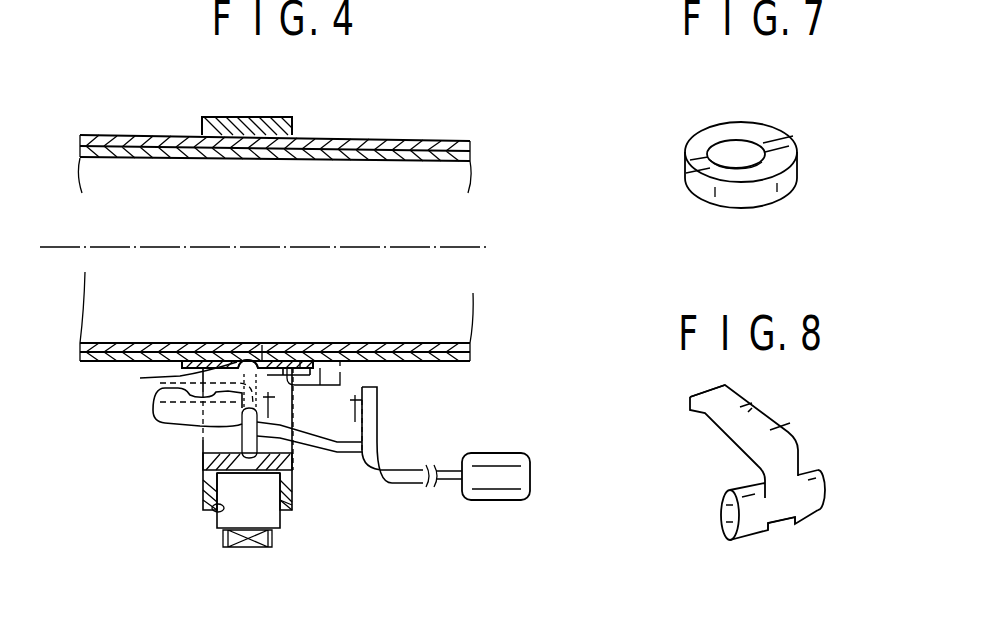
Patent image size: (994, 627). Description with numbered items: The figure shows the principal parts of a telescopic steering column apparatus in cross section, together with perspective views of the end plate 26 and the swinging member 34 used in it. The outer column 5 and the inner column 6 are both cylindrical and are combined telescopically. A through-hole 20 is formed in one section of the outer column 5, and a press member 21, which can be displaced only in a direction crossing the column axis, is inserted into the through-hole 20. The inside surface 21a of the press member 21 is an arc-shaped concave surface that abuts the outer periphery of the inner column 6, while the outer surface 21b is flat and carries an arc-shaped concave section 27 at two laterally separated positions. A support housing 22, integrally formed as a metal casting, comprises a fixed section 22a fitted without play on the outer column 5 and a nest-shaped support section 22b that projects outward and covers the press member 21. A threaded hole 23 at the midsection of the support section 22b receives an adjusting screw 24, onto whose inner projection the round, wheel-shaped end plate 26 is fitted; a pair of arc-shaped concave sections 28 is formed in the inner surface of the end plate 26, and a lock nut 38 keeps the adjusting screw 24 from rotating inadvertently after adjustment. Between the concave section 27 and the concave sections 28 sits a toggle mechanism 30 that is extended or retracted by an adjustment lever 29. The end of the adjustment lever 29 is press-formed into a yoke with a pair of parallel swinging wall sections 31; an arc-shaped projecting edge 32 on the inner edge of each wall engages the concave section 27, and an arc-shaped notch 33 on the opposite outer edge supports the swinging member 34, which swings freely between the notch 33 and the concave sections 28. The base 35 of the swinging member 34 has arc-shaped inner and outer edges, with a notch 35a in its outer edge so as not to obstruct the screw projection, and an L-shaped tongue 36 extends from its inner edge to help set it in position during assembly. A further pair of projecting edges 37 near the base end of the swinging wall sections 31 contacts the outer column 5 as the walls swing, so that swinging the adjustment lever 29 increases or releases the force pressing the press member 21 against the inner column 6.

In FIG. 4, the outer column 5 is at (370, 135).
In FIG. 4, the inner column 6 is at (424, 152).
In FIG. 4, the support housing 22 is at (202, 120).
In FIG. 4, the fixed section 22a is at (272, 117).
In FIG. 4, the support section 22b is at (203, 492).
In FIG. 4, the toggle mechanism 30 is at (240, 352).
In FIG. 4, the arc-shaped concave section 27 is at (248, 362).
In FIG. 4, the arc-shaped projecting edge 32 is at (262, 345).
In FIG. 4, the inside surface 21a is at (280, 345).
In FIG. 4, the through-hole 20 is at (305, 345).
In FIG. 4, the projecting edge 37 is at (343, 346).
In FIG. 4, the press member 21 is at (140, 378).
In FIG. 4, the outer surface 21b is at (338, 368).
In FIG. 4, the L-shaped tongue 36 is at (160, 396).
In FIG. 8, the L-shaped tongue 36 is at (700, 413).
In FIG. 4, the arc-shaped notch 33 is at (290, 416).
In FIG. 4, the arc-shaped concave section 28 is at (204, 452).
In FIG. 7, the arc-shaped concave section 28 is at (794, 136).
In FIG. 4, the end plate 26 is at (295, 462).
In FIG. 7, the end plate 26 is at (688, 150).
In FIG. 4, the threaded hole 23 is at (210, 516).
In FIG. 4, the adjusting screw 24 is at (272, 532).
In FIG. 4, the lock nut 38 is at (292, 516).
In FIG. 4, the swinging member 34 is at (295, 442).
In FIG. 8, the swinging member 34 is at (776, 436).
In FIG. 4, the swinging wall section 31 is at (352, 442).
In FIG. 4, the adjustment lever 29 is at (410, 486).
In FIG. 8, the base 35 is at (825, 471).
In FIG. 8, the notch 35a is at (786, 525).